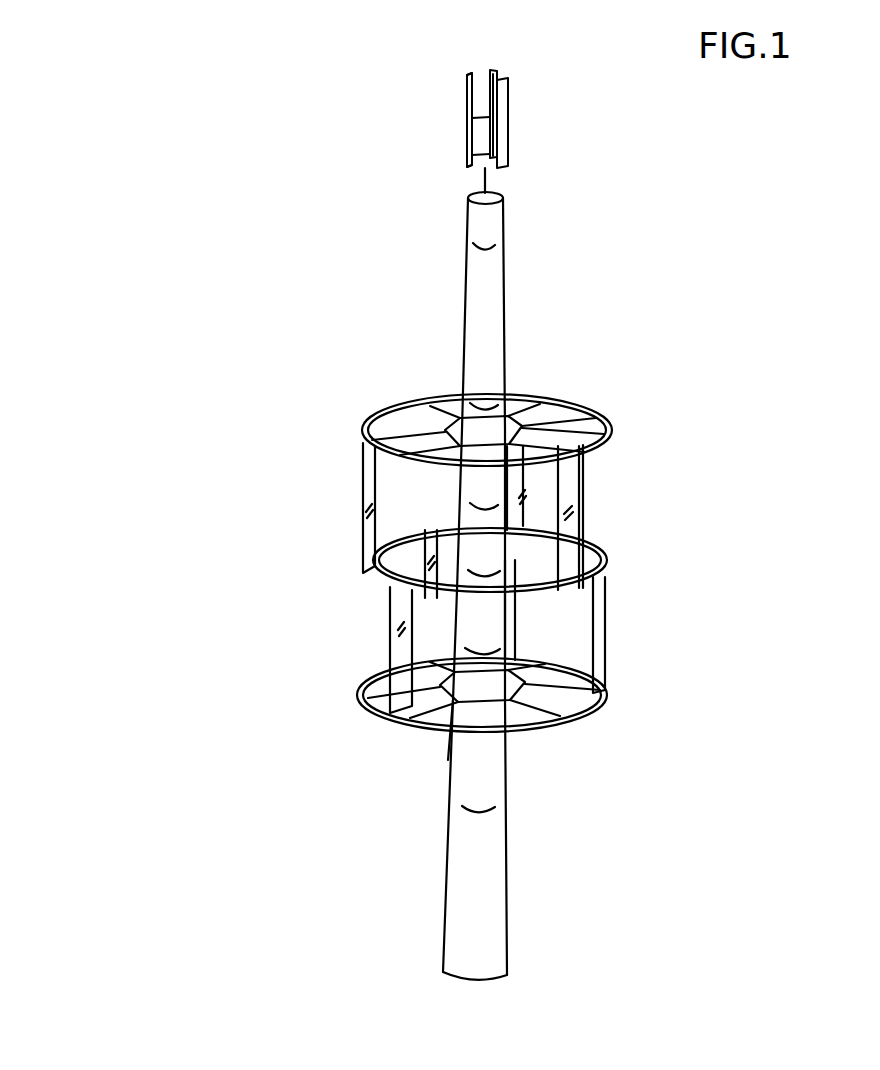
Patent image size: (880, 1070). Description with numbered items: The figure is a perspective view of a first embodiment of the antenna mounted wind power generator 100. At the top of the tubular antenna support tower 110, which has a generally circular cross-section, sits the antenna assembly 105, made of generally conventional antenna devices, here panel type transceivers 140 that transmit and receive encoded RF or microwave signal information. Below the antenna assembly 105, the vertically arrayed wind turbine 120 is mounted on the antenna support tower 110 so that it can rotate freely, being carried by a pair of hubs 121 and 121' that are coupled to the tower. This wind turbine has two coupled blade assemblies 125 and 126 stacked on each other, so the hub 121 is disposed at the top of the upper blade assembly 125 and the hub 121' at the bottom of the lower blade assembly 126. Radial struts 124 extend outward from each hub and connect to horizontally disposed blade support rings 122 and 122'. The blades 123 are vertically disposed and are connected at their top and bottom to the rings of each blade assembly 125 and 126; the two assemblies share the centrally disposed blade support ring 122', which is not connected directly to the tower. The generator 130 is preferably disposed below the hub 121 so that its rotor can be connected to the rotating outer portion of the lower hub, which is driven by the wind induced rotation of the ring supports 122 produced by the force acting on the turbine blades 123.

The antenna mounted wind power generator 100 is at (262, 132).
The antenna assembly 105 is at (537, 148).
The antenna support tower 110 is at (520, 857).
The vertically arrayed wind turbine (VAWT) 120 is at (170, 592).
The hub 121 is at (531, 665).
The hub 121' is at (444, 368).
The blade support ring 122 is at (406, 704).
The blade support ring 122' is at (527, 536).
The blades 123 is at (357, 525).
The radial struts 124 is at (548, 412).
The upper blade assembly 125 is at (517, 411).
The lower blade assembly 126 is at (509, 662).
The generator 130 is at (450, 740).
The panel type transceivers 140 is at (467, 111).